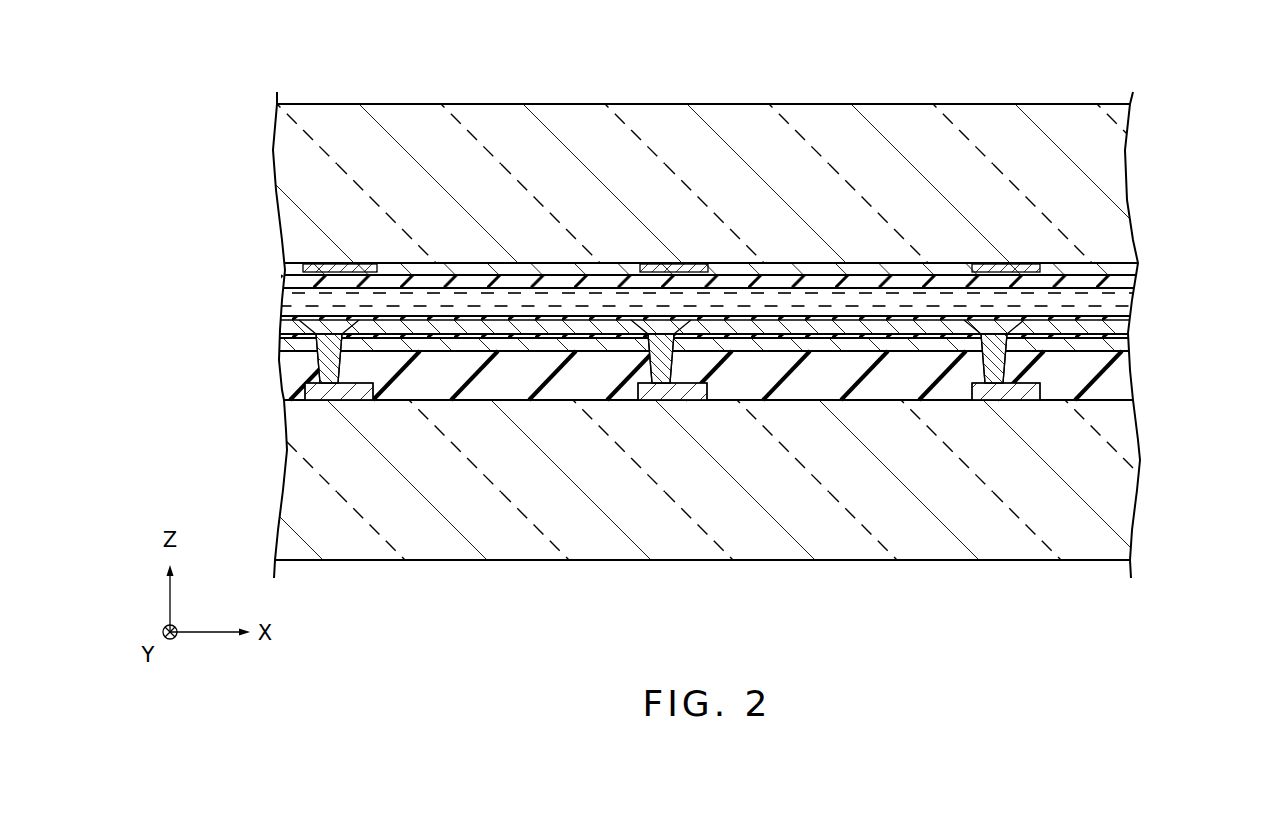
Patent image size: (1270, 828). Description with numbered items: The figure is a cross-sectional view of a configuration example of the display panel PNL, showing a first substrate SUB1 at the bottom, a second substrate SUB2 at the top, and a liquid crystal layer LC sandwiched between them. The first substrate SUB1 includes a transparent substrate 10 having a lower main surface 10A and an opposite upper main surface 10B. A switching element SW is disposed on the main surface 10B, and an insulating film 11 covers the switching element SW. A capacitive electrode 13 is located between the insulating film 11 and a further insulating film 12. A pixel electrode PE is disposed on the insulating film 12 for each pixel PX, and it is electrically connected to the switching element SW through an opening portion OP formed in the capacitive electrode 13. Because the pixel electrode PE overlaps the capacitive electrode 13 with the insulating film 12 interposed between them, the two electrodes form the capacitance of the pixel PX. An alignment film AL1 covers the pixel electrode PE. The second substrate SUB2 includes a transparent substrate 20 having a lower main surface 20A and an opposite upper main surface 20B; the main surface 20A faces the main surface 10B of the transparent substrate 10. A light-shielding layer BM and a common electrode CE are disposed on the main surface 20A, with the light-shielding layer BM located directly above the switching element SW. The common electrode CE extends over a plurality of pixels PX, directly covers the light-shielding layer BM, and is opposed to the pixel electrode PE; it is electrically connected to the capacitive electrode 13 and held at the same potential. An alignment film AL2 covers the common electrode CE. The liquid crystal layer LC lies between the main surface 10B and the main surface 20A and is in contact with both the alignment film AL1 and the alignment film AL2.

The transparent substrate 20 is at (290, 170).
The main surface 20A is at (863, 283).
The main surface 20B is at (924, 102).
The light-shielding layer BM is at (340, 263).
The pixel electrode PE is at (497, 320).
The display panel PNL is at (731, 333).
The second substrate SUB2 is at (739, 164).
The common electrode CE is at (1130, 272).
The alignment film AL2 is at (1127, 285).
The alignment film AL1 is at (283, 316).
The liquid crystal layer LC is at (1132, 308).
The insulating film 12 is at (278, 326).
The capacitive electrode 13 is at (280, 342).
The opening portion OP is at (318, 358).
The insulating film 11 is at (288, 387).
The switching element SW is at (338, 400).
The transparent substrate 10 is at (290, 498).
The pixel PX is at (504, 387).
The main surface 10B is at (855, 400).
The main surface 10A is at (917, 572).
The first substrate SUB1 is at (730, 347).